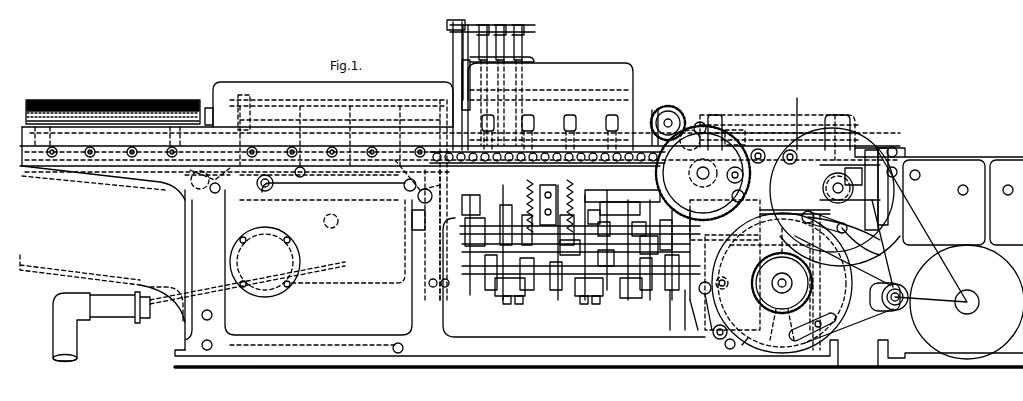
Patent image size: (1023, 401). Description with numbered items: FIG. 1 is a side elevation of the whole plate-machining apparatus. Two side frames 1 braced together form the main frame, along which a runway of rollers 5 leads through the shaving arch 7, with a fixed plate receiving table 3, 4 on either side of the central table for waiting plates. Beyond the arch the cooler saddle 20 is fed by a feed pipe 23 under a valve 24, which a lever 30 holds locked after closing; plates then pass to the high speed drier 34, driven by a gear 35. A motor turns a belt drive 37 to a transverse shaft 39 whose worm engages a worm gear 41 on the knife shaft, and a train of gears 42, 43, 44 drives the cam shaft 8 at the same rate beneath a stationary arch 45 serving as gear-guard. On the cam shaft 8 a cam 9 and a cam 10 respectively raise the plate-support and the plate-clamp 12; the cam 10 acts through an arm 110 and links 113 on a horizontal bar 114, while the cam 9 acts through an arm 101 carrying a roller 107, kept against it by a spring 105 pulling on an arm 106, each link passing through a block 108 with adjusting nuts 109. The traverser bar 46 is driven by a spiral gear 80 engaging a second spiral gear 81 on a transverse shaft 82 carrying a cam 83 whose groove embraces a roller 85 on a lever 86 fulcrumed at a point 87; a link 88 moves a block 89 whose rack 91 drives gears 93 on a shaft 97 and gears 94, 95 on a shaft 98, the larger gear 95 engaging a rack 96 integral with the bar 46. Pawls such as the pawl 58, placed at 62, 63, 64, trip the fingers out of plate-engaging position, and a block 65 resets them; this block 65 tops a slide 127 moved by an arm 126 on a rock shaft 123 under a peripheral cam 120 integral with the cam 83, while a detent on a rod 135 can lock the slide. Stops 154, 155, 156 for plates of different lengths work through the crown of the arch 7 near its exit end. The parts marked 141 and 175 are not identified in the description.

The side frame 1 is at (826, 352).
The fixed plate receiving table 3 is at (985, 160).
The fixed plate receiving table 4 is at (790, 385).
The series of rollers 5 is at (776, 161).
The shaving arch 7 is at (611, 72).
The cam shaft 8 is at (618, 228).
The cam 9 is at (649, 245).
The cam 10 is at (645, 268).
The plate-clamp 12 is at (492, 210).
The saddle 20 is at (345, 108).
The feed pipe 23 is at (331, 228).
The valve 24 is at (216, 192).
The lever 30 is at (252, 200).
The high speed drier 34 is at (118, 105).
The gear 35 is at (170, 188).
The belt drive 37 is at (944, 240).
The transverse shaft 39 is at (830, 188).
The worm gear 41 is at (843, 128).
The gear 42 is at (733, 138).
The gear 43 is at (744, 191).
The gear 44 is at (736, 249).
The stationary arch 45 is at (752, 122).
The traverser bar 46 is at (918, 153).
The pawl 58 is at (881, 148).
The finger-tripping pawl device 62 is at (703, 173).
The finger-tripping pawl device 63 is at (445, 128).
The finger-tripping pawl device 64 is at (422, 162).
The block 65 is at (890, 152).
The spiral gear 80 is at (783, 210).
The second spiral gear 81 is at (770, 310).
The transverse shaft 82 is at (772, 280).
The cam 83 is at (834, 331).
The roller 85 is at (732, 282).
The lever 86 is at (714, 330).
The fulcrum point 87 is at (725, 343).
The link 88 is at (600, 213).
The block 89 is at (642, 226).
The horizontal rack 91 is at (608, 190).
The larger gear 93 is at (752, 155).
The gear 94 is at (689, 115).
The larger gear 95 is at (668, 107).
The rack 96 is at (777, 140).
The transverse shaft 97 is at (743, 178).
The transverse shaft 98 is at (703, 123).
The arm 101 is at (655, 296).
The spring 105 is at (658, 314).
The arm 106 is at (686, 303).
The roller 107 is at (740, 298).
The block 108 is at (583, 319).
The nut 109 is at (575, 296).
The arm 110 is at (648, 280).
The link 113 is at (578, 270).
The horizontal bar 114 is at (525, 272).
The peripheral cam 120 is at (744, 344).
The rock shaft 123 is at (868, 267).
The arm 126 is at (870, 252).
The slide 127 is at (892, 243).
The rod 135 is at (850, 178).
The block 141 is at (494, 208).
The stop 154 is at (522, 58).
The stop 155 is at (503, 83).
The stop 156 is at (479, 69).
The casing 175 is at (298, 255).